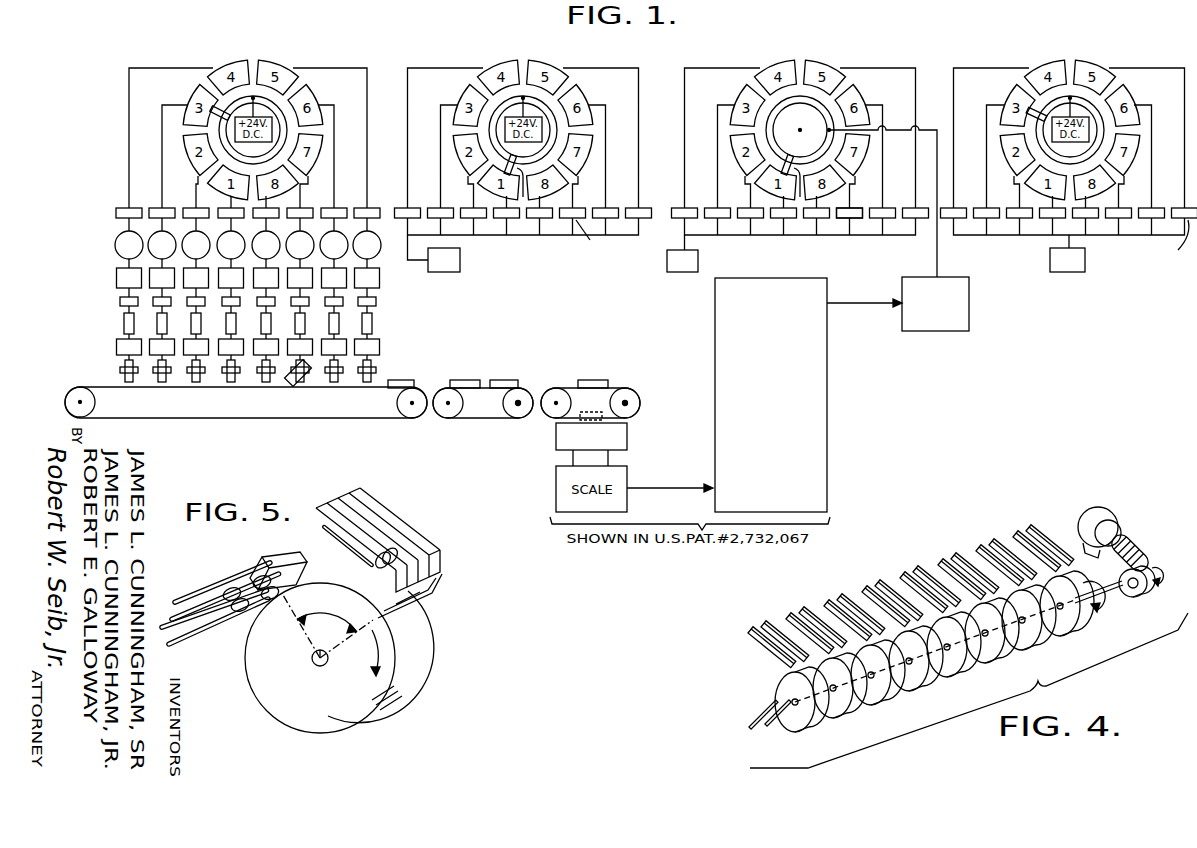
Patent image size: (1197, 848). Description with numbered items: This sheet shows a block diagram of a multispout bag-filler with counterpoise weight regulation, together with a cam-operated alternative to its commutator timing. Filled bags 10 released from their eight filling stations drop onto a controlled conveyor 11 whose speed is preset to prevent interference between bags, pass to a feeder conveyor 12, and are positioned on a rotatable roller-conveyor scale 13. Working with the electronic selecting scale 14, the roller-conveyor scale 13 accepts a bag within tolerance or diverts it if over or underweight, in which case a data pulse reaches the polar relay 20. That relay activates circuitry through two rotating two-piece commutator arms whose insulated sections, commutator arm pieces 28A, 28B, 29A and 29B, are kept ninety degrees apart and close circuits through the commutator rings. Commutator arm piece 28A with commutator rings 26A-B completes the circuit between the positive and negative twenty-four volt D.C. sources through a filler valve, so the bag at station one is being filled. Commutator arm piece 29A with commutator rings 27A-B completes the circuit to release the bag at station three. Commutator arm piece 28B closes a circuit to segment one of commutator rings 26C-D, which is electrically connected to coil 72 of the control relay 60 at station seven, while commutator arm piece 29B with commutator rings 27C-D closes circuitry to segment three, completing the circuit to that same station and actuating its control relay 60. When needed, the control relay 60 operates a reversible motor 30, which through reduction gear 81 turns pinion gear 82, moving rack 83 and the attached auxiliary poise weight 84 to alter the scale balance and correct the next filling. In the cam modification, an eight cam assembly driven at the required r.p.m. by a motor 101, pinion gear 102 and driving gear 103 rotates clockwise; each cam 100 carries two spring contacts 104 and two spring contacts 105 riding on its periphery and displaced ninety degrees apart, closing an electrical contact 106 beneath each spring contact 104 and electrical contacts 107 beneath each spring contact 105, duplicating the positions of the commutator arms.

In FIG. 1, the bag 10 is at (119, 381).
In FIG. 1, the controlled conveyor 11 is at (311, 419).
In FIG. 1, the feeder conveyor 12 is at (485, 419).
In FIG. 1, the roller-conveyor scale 13 is at (612, 387).
In FIG. 1, the electronic selecting scale 14 is at (771, 395).
In FIG. 1, the polar relay 20 is at (898, 304).
In FIG. 1, the commutator rings 26A–B 26A-B is at (523, 153).
In FIG. 1, the commutator rings 26C–D 26C-D is at (802, 156).
In FIG. 1, the commutator rings 27A–B 27A-B is at (1069, 153).
In FIG. 1, the commutator rings 27C–D 27C-D is at (248, 123).
In FIG. 1, the commutator arm piece 28A is at (519, 182).
In FIG. 1, the commutator arm piece 28B is at (796, 182).
In FIG. 1, the commutator arm piece 29A is at (1040, 110).
In FIG. 1, the commutator arm piece 29B is at (222, 111).
In FIG. 1, the reversible motor 30 is at (115, 247).
In FIG. 1, the control relay 60 is at (116, 213).
In FIG. 1, the coil 72 is at (851, 208).
In FIG. 1, the reduction gear 81 is at (116, 279).
In FIG. 1, the pinion gear 82 is at (120, 301).
In FIG. 1, the rack 83 is at (124, 324).
In FIG. 1, the auxiliary poise weight 84 is at (116, 347).
In FIG. 5, the cam 100 is at (423, 652).
In FIG. 4, the cam 100 is at (1083, 617).
In FIG. 4, the motor 101 is at (1119, 519).
In FIG. 4, the pinion gear 102 is at (1137, 551).
In FIG. 4, the driving gear 103 is at (1145, 594).
In FIG. 5, the spring contacts 104 is at (367, 524).
In FIG. 4, the spring contacts 104 is at (762, 628).
In FIG. 5, the spring contacts 105 is at (194, 593).
In FIG. 4, the spring contacts 105 is at (765, 728).
In FIG. 5, the electrical contact 106 is at (373, 567).
In FIG. 5, the electrical contacts 107 is at (238, 611).